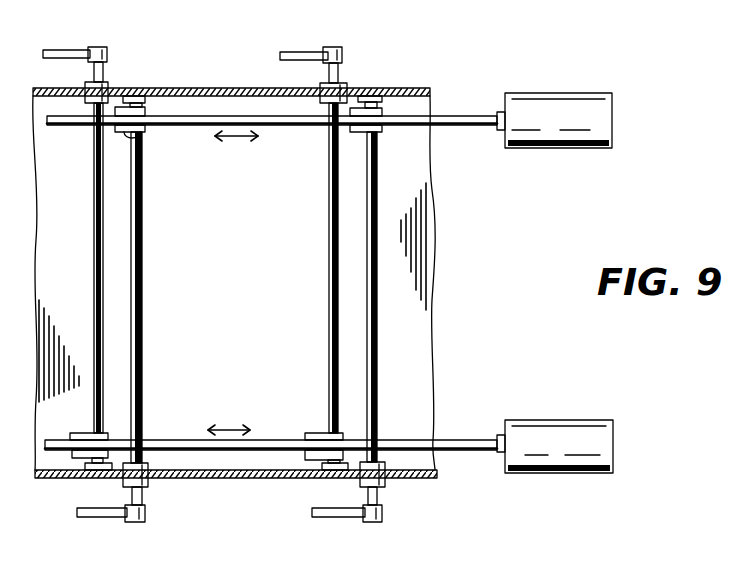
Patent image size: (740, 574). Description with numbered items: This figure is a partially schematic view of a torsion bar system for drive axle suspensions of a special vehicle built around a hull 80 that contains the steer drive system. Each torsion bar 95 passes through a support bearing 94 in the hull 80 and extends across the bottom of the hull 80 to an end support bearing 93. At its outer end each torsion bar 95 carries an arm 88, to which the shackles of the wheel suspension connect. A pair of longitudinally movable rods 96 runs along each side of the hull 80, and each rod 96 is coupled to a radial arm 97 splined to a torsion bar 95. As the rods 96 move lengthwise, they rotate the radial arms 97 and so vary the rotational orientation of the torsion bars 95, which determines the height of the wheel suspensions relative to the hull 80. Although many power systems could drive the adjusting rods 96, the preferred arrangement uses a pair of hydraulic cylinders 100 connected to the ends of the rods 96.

The hull 80 is at (205, 88).
The arm 88 is at (76, 47).
The end support bearing 93 is at (383, 102).
The support bearing 94 is at (108, 85).
The torsion bar 95 is at (103, 322).
The longitudinally movable rod 96 is at (455, 126).
The radial arm 97 is at (141, 133).
The hydraulic cylinder 100 is at (553, 149).